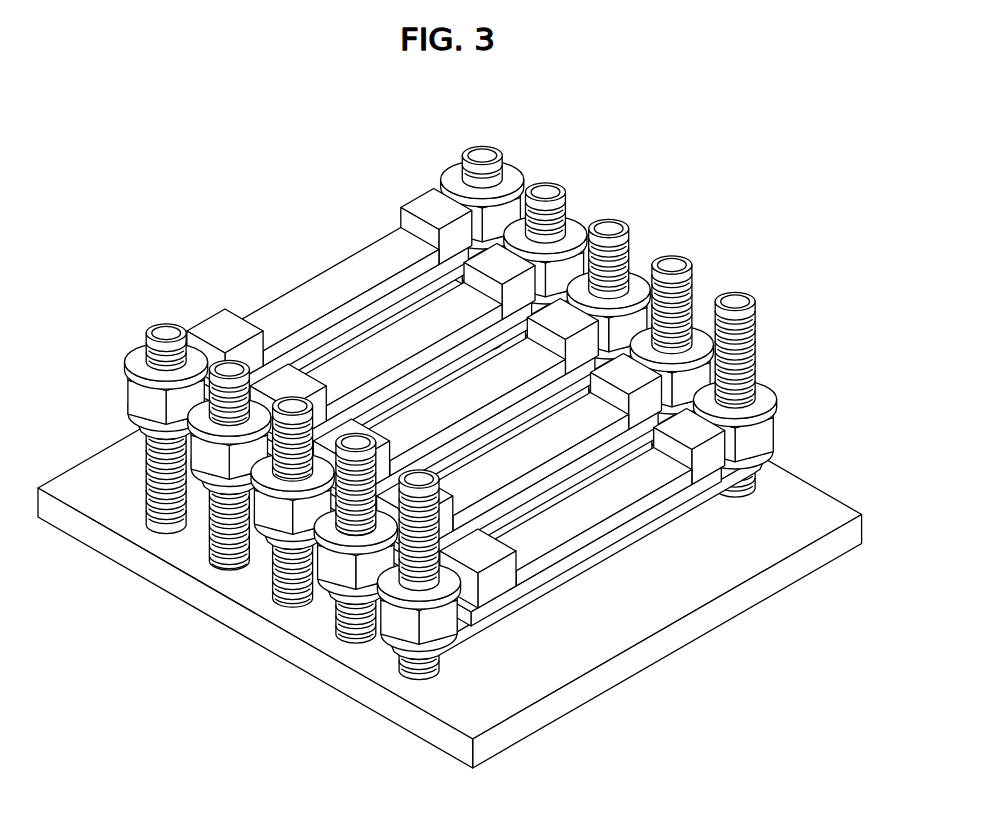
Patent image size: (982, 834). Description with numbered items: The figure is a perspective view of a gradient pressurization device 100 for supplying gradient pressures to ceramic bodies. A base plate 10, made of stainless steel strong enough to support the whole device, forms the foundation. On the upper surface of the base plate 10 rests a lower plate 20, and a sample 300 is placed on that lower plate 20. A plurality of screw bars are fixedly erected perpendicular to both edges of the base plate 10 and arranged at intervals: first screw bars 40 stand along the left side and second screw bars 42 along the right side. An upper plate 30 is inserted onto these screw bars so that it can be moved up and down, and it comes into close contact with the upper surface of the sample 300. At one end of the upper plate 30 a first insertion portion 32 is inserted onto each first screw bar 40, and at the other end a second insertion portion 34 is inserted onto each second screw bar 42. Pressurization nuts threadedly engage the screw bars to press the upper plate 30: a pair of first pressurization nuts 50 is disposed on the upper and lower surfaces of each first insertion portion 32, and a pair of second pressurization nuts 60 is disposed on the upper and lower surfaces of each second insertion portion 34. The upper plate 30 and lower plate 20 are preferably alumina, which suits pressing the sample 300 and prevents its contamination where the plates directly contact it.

The base plate 10 is at (450, 516).
The lower plate 20 is at (611, 549).
The upper plate 30 is at (599, 542).
The first insertion portion 32 is at (379, 648).
The second insertion portion 34 is at (776, 424).
The first screw bars 40 is at (318, 573).
The second screw bars 42 is at (776, 350).
The first pressurization nuts 50 is at (419, 691).
The second pressurization nuts 60 is at (774, 403).
The gradient pressurization device 100 is at (450, 423).
The sample 300 is at (577, 598).